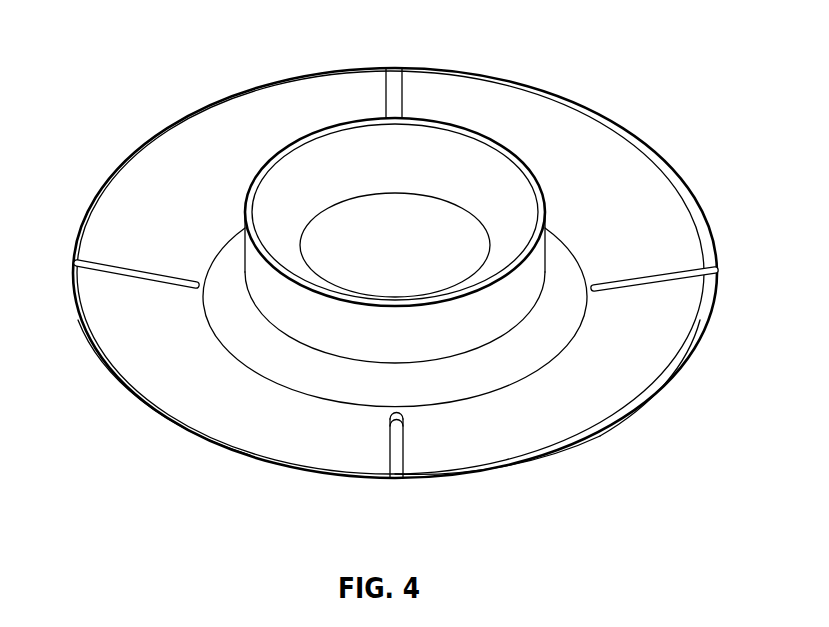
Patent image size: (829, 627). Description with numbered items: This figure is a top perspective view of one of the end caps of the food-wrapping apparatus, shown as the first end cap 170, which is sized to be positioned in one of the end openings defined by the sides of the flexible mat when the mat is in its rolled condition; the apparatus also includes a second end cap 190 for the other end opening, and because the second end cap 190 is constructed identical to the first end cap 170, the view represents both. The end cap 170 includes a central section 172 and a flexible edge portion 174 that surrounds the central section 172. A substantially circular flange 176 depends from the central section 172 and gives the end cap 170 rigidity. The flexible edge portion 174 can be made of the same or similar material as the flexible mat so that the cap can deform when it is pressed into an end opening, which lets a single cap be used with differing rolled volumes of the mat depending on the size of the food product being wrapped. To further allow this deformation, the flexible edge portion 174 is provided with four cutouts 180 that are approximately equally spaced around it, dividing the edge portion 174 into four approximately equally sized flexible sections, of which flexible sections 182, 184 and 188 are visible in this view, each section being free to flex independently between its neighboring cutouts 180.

The end cap 170 is at (598, 160).
The second end cap 190 is at (409, 260).
The central section 172 is at (381, 217).
The flexible edge portion 174 is at (537, 432).
The substantially circular flange 176 is at (360, 344).
The cutouts 180 is at (383, 98).
The flexible section 182 is at (670, 328).
The flexible section 184 is at (145, 362).
The flexible section 188 is at (203, 128).